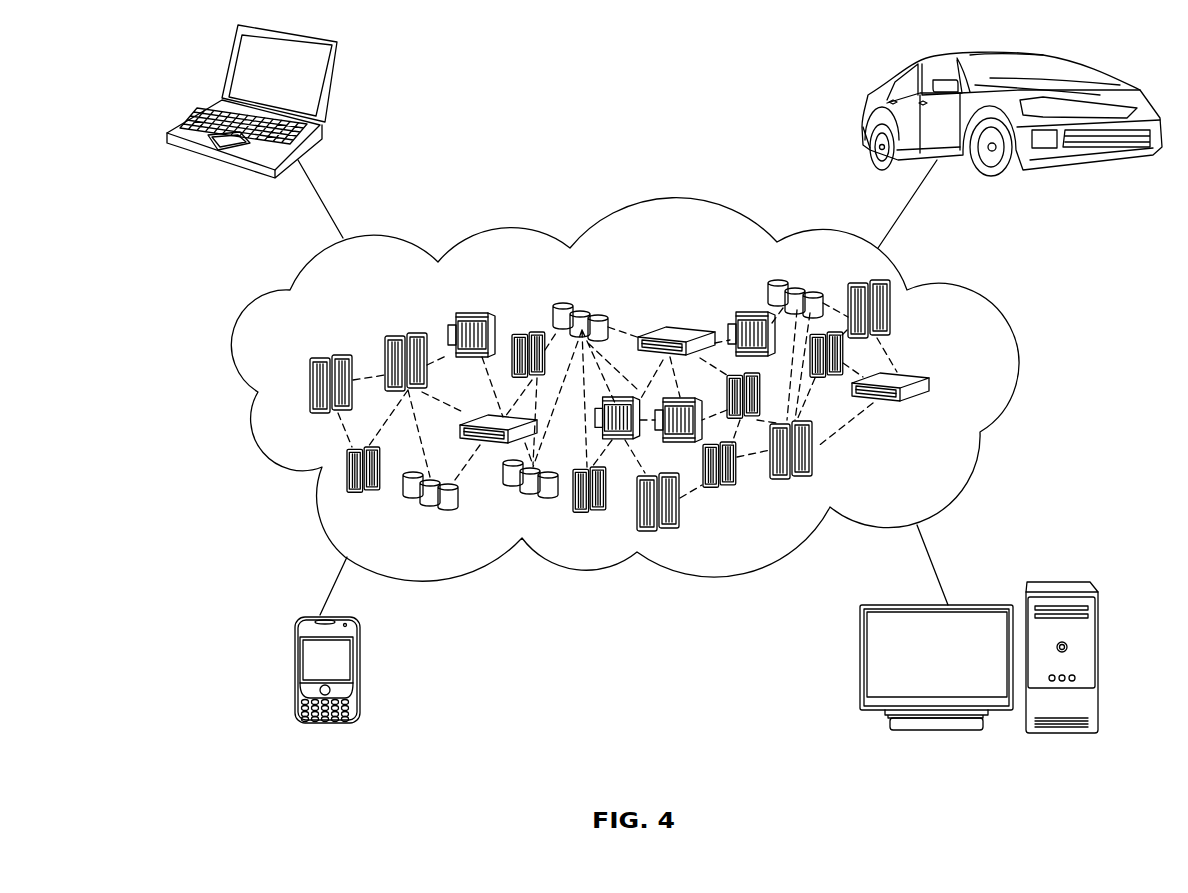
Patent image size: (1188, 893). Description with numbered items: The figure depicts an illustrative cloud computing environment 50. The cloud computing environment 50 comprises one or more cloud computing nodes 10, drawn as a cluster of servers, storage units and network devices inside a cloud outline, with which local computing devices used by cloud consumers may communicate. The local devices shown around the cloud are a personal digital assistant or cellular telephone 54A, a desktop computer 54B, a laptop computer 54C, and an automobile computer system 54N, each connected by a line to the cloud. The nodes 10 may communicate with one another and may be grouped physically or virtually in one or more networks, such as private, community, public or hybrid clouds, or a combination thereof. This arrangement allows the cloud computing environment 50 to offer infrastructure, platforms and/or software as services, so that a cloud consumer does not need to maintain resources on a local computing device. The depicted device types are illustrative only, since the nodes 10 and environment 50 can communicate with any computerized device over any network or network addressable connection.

The cloud computing nodes 10 is at (654, 390).
The cloud computing environment 50 is at (990, 305).
The cellular telephone 54A is at (298, 672).
The desktop computer 54B is at (1068, 582).
The laptop computer 54C is at (332, 88).
The automobile computer system 54N is at (872, 100).